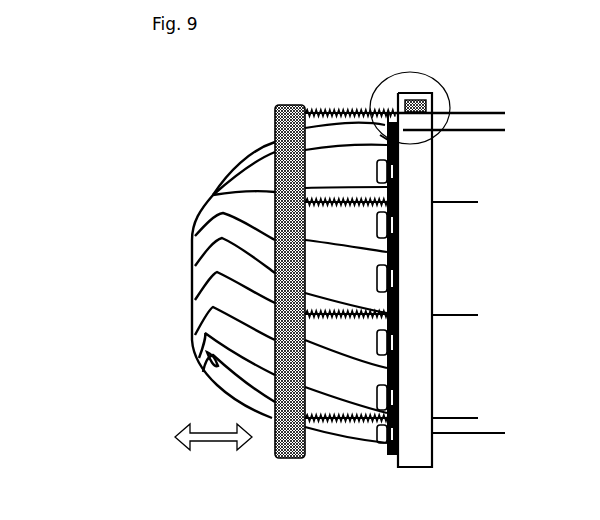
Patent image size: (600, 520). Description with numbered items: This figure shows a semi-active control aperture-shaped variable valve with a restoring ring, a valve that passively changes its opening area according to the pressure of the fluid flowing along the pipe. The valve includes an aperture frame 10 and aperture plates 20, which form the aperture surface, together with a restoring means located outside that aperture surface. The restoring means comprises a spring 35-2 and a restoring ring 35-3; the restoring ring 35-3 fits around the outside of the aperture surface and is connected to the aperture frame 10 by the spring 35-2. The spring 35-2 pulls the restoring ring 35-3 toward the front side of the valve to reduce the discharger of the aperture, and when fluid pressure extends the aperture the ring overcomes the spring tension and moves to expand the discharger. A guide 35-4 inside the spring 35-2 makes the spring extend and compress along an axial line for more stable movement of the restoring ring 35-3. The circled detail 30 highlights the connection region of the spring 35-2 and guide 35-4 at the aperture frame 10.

The aperture frame 10 is at (420, 192).
The aperture plates 20 is at (226, 205).
The latch detail 30 is at (408, 101).
The spring 35-2 is at (332, 112).
The restoring ring 35-3 is at (282, 117).
The guide 35-4 is at (472, 112).